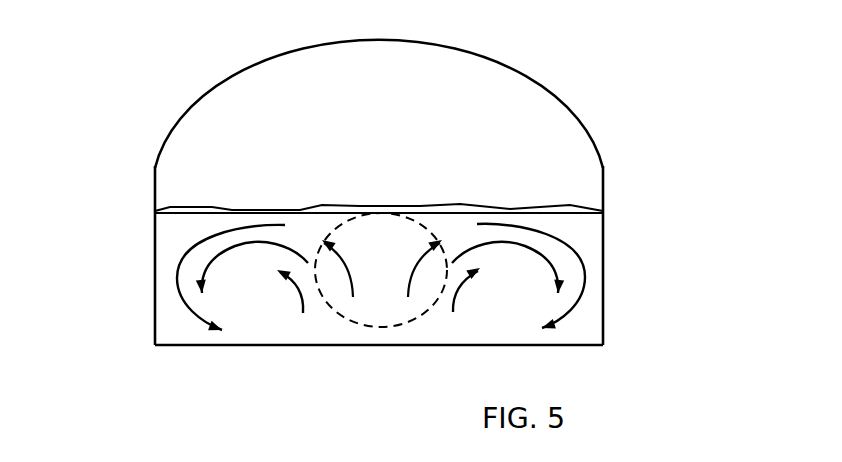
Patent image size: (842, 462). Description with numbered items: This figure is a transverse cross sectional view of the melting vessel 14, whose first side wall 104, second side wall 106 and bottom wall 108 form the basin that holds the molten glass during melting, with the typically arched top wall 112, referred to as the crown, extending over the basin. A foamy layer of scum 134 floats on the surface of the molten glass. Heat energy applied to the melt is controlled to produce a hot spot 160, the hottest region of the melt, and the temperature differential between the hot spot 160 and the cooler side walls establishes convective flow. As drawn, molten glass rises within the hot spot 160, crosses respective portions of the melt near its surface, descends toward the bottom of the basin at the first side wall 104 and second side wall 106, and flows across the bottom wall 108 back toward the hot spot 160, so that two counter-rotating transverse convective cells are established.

The melting vessel 14 is at (158, 110).
The top wall 112 is at (442, 45).
The first side wall 104 is at (155, 268).
The second side wall 106 is at (603, 270).
The bottom wall 108 is at (373, 345).
The scum 134 is at (487, 203).
The hot spot 160 is at (415, 222).